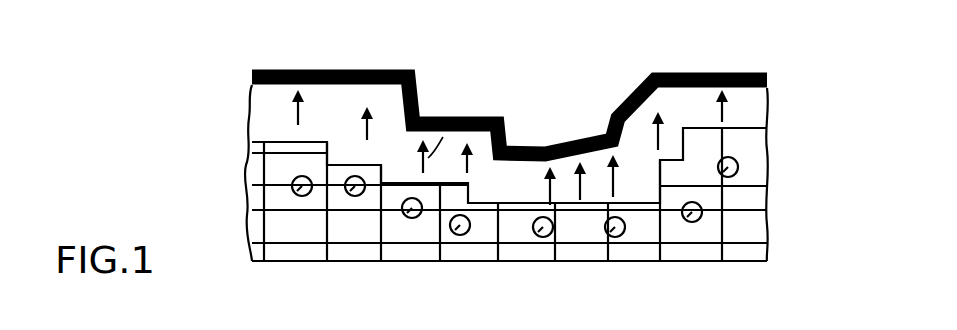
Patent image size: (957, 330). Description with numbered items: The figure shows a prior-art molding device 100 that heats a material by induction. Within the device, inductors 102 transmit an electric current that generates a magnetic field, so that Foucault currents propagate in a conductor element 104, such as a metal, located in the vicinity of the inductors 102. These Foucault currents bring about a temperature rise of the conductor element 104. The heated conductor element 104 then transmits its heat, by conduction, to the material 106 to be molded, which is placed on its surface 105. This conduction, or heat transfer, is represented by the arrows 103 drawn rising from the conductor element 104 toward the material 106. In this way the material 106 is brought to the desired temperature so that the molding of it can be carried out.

The molding device 100 is at (800, 114).
The inductors 102 is at (452, 232).
The arrows 103 is at (299, 112).
The conductor element 104 is at (265, 128).
The surface 105 is at (255, 97).
The material to be molded 106 is at (375, 68).